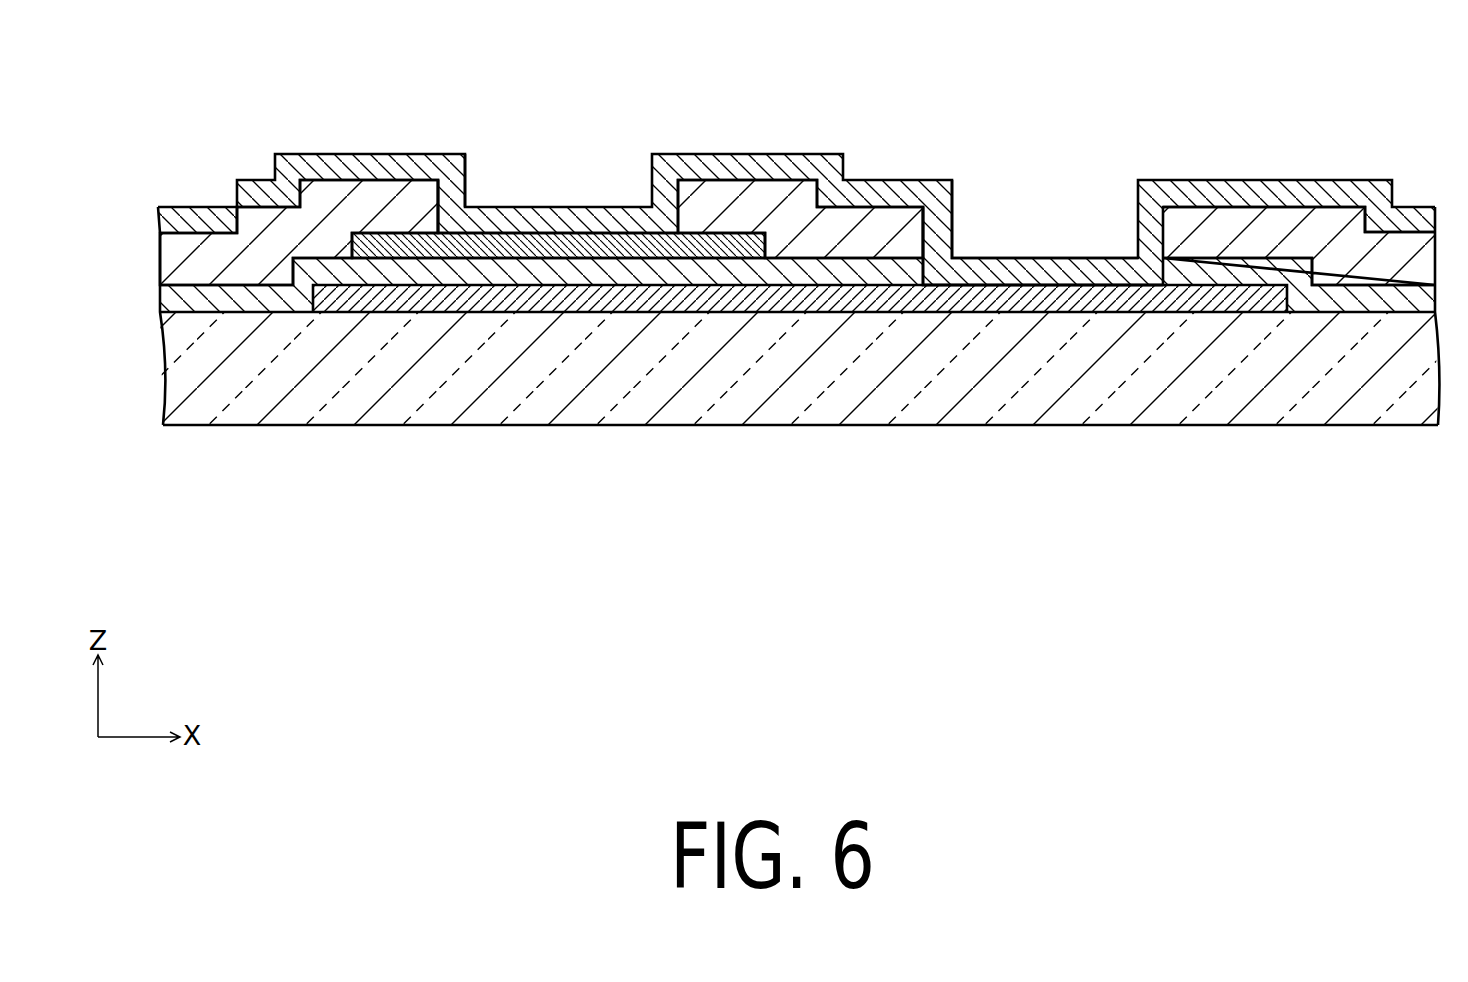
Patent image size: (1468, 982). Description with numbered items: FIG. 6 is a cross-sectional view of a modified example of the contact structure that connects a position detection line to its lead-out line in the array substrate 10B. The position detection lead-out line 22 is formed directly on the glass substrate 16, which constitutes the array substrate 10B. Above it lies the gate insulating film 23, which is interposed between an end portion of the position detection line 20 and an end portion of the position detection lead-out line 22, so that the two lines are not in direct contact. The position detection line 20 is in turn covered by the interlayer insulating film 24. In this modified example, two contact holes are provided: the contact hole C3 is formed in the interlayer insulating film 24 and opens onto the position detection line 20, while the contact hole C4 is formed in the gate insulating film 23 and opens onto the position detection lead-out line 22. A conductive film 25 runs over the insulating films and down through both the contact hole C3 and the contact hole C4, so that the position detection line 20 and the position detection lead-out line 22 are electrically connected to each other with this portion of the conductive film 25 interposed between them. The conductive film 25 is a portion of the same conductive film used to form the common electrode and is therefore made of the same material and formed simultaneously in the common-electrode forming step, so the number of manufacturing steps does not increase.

The array substrate 10B is at (1401, 105).
The glass substrate 16 is at (362, 383).
The position detection line 20 is at (529, 250).
The position detection lead-out line 22 is at (619, 292).
The gate insulating film 23 is at (1340, 300).
The interlayer insulating film 24 is at (345, 210).
The conductive film 25 is at (749, 172).
The contact hole C3 is at (442, 193).
The contact hole C4 is at (927, 277).